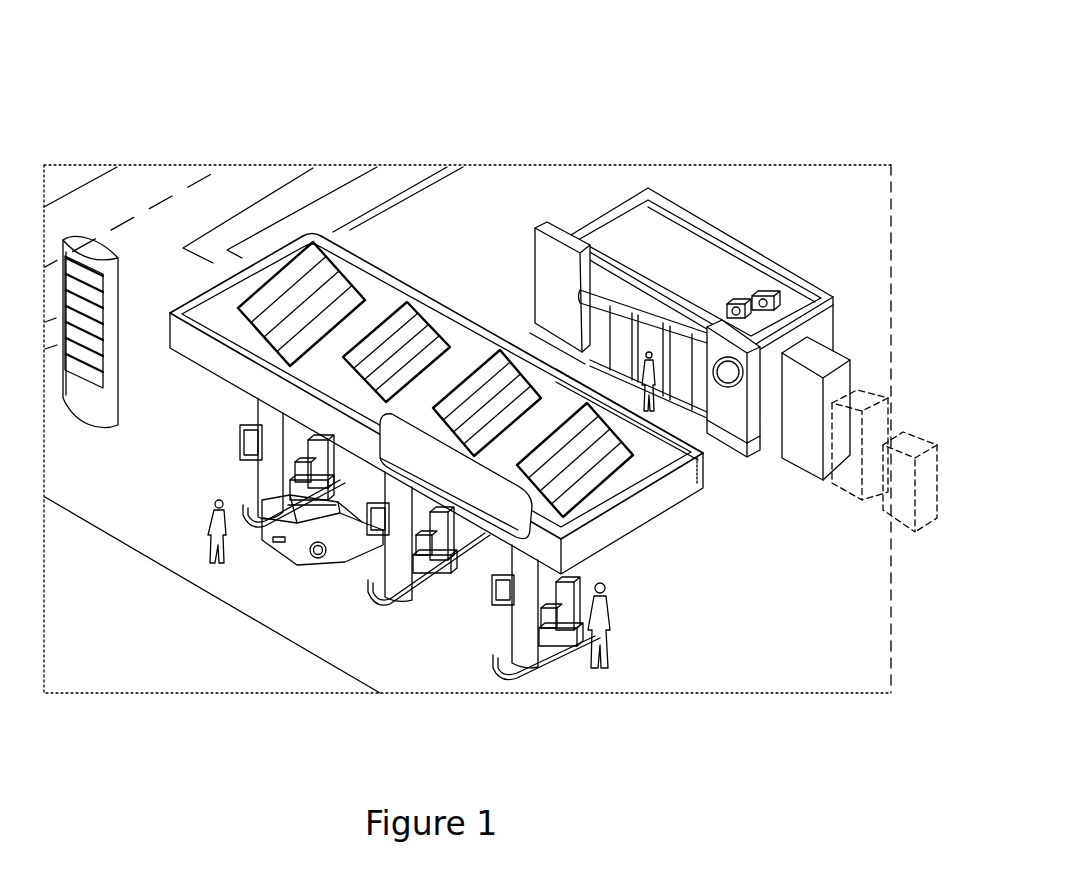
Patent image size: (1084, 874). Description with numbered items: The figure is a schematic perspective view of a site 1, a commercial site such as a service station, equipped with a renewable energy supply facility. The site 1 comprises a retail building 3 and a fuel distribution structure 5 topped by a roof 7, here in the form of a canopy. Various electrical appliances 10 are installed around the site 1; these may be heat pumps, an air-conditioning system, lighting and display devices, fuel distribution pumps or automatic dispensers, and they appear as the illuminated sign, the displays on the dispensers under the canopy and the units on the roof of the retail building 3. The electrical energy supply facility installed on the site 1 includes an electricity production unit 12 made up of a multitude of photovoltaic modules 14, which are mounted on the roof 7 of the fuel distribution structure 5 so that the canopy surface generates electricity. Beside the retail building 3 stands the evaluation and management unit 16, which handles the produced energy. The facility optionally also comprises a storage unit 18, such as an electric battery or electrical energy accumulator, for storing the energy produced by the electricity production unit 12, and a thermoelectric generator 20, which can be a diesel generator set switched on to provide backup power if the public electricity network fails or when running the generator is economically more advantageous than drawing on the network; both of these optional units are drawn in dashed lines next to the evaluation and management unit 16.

The site 1 is at (507, 128).
The retail building 3 is at (657, 225).
The fuel distribution structure 5 is at (660, 585).
The roof 7 is at (683, 493).
The electrical appliances 10 is at (88, 237).
The electricity production unit 12 is at (357, 257).
The photovoltaic modules 14 is at (253, 318).
The evaluation and management unit 16 is at (800, 367).
The storage unit 18 is at (853, 408).
The thermoelectric generator 20 is at (900, 513).